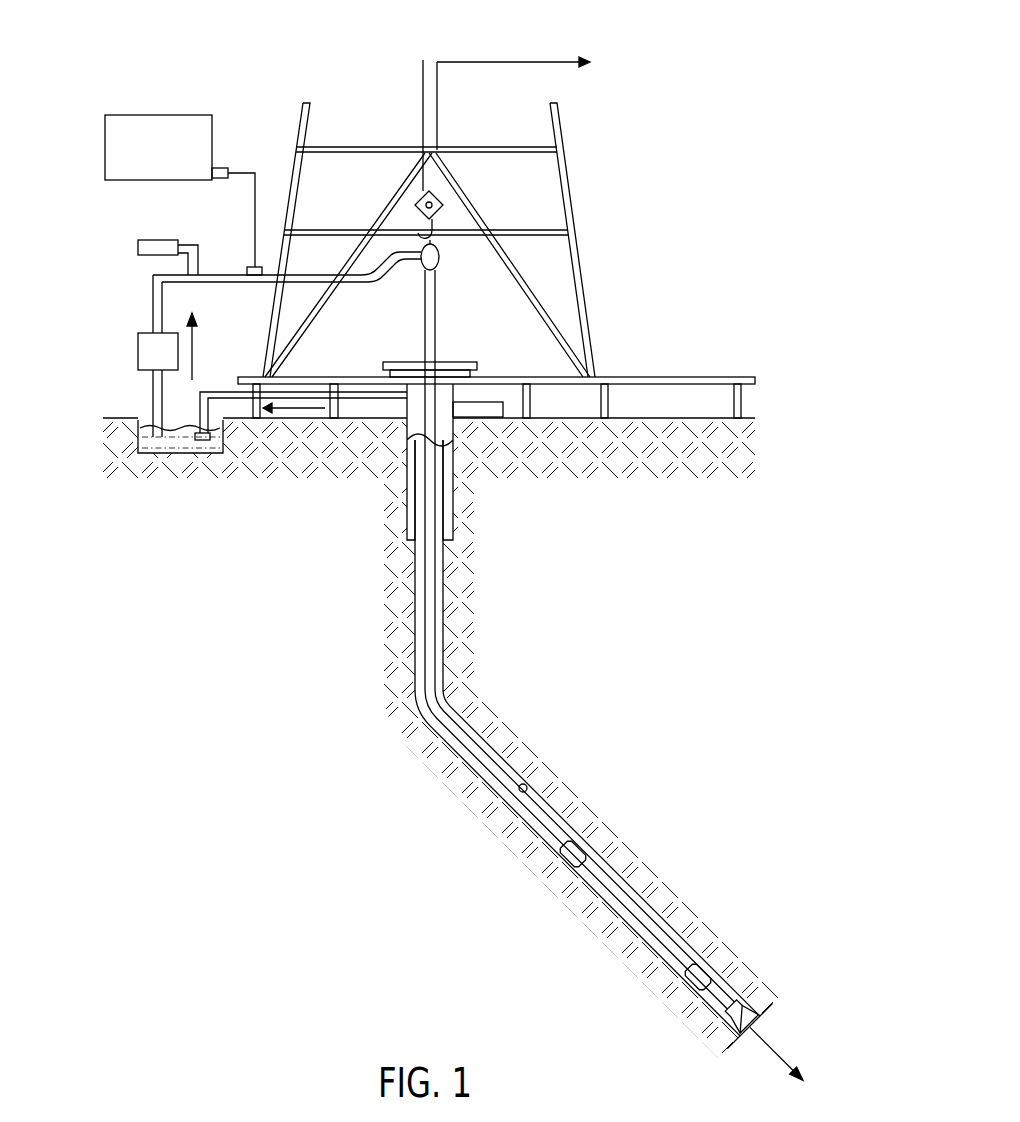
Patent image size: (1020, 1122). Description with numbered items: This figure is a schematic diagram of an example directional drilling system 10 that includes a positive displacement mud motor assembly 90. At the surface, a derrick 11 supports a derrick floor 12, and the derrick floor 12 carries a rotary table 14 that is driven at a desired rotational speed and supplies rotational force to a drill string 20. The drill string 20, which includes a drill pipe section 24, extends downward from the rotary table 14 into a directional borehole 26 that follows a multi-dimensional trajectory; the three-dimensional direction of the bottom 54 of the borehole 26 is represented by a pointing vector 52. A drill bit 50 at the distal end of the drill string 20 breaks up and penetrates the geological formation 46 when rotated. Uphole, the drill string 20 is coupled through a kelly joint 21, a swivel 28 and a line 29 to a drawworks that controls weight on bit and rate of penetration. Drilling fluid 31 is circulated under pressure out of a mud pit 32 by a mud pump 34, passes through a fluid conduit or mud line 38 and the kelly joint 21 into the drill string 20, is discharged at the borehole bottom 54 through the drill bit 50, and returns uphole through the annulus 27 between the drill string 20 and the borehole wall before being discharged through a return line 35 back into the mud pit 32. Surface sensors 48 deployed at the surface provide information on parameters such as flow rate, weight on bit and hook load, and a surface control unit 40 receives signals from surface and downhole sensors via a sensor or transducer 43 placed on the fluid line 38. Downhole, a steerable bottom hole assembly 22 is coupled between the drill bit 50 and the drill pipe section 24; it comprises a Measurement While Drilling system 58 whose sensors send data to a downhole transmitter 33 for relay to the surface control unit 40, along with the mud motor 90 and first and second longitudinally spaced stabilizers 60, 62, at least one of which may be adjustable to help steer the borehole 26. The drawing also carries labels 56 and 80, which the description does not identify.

The directional drilling system 10 is at (142, 43).
The derrick 11 is at (571, 193).
The derrick floor 12 is at (597, 376).
The rotary table 14 is at (410, 362).
The drill string 20 is at (578, 686).
The kelly joint 21 is at (437, 295).
The bottom hole assembly 22 is at (694, 890).
The drill pipe section 24 is at (446, 599).
The directional borehole 26 is at (441, 742).
The annulus 27 is at (491, 757).
The swivel 28 is at (440, 255).
The line 29 is at (438, 108).
The drilling fluid 31 is at (145, 422).
The mud pit 32 is at (193, 454).
The downhole transmitter 33 is at (553, 828).
The mud pump 34 is at (138, 352).
The return line 35 is at (373, 397).
The fluid conduit 38 is at (223, 283).
The surface control unit 40 is at (105, 145).
The sensor or transducer 43 is at (248, 268).
The geological formation 46 is at (564, 893).
The surface sensors 48 is at (478, 402).
The drill bit 50 is at (749, 1003).
The pointing vector 52 is at (767, 1047).
The bottom of the borehole 54 is at (723, 1047).
The downhole sensor 56 is at (528, 786).
The Measurement While Drilling system 58 is at (623, 959).
The first stabilizer 60 is at (709, 968).
The second stabilizer 62 is at (584, 849).
The surface sensor 80 is at (138, 246).
The mud motor assembly 90 is at (616, 874).